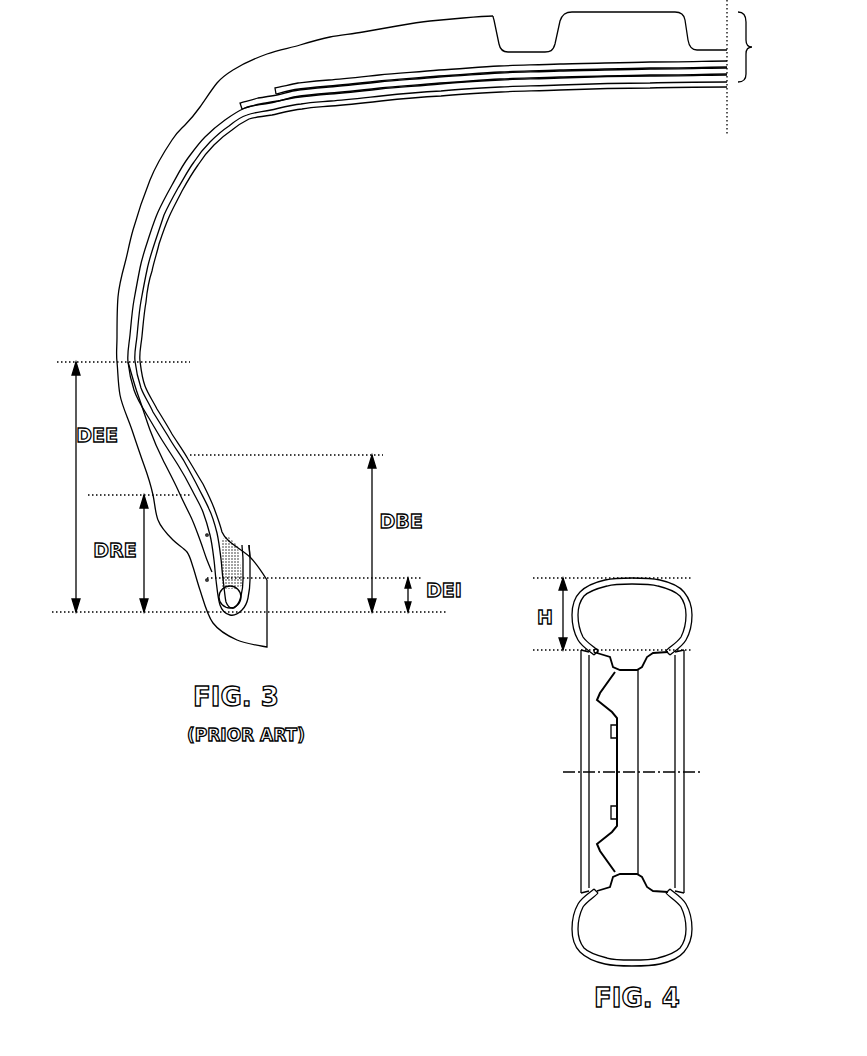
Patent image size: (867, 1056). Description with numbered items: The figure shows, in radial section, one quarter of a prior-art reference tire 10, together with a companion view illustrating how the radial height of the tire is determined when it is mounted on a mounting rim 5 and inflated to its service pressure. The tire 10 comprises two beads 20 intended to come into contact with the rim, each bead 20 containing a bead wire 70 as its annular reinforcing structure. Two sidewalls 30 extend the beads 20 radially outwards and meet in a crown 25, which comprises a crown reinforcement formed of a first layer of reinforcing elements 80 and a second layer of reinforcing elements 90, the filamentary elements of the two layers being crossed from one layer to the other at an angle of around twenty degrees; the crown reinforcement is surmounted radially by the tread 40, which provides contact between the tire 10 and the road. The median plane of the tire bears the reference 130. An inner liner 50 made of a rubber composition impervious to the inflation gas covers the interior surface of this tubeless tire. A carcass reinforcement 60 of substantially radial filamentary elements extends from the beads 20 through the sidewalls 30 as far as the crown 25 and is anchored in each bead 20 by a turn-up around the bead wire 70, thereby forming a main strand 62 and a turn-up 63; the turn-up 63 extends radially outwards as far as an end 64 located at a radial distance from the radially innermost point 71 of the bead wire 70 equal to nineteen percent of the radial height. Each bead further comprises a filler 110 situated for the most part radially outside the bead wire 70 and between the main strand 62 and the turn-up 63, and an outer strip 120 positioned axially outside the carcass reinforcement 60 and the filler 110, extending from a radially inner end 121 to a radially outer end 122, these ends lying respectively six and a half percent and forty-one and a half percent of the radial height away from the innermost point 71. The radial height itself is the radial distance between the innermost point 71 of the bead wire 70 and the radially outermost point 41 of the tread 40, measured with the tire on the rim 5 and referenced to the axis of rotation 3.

In FIG. 3, the tire 10 is at (175, 97).
In FIG. 4, the tire 10 is at (702, 617).
In FIG. 3, the bead 20 is at (197, 572).
In FIG. 3, the crown 25 is at (767, 47).
In FIG. 3, the sidewall 30 is at (137, 250).
In FIG. 3, the tread 40 is at (484, 51).
In FIG. 4, the radially outermost point of the tread 41 is at (631, 570).
In FIG. 3, the inner liner 50 is at (148, 263).
In FIG. 3, the carcass reinforcement 60 is at (132, 317).
In FIG. 3, the main strand 62 is at (233, 512).
In FIG. 3, the turn-up 63 is at (207, 535).
In FIG. 3, the end of the turn-up 64 is at (180, 490).
In FIG. 3, the bead wire 70 is at (227, 600).
In FIG. 4, the bead wire 70 is at (598, 652).
In FIG. 3, the radially innermost point of the annular reinforcing structure 71 is at (236, 615).
In FIG. 3, the first layer of reinforcing elements 80 is at (315, 84).
In FIG. 3, the second layer of reinforcing elements 90 is at (342, 78).
In FIG. 3, the filler 110 is at (247, 543).
In FIG. 3, the outer strip 120 is at (152, 433).
In FIG. 3, the radially inner end of the outer strip 121 is at (207, 580).
In FIG. 3, the radially outer end of the outer strip 122 is at (128, 358).
In FIG. 3, the median plane 130 is at (728, 128).
In FIG. 4, the mounting rim 5 is at (704, 692).
In FIG. 4, the axis of rotation 3 is at (649, 772).